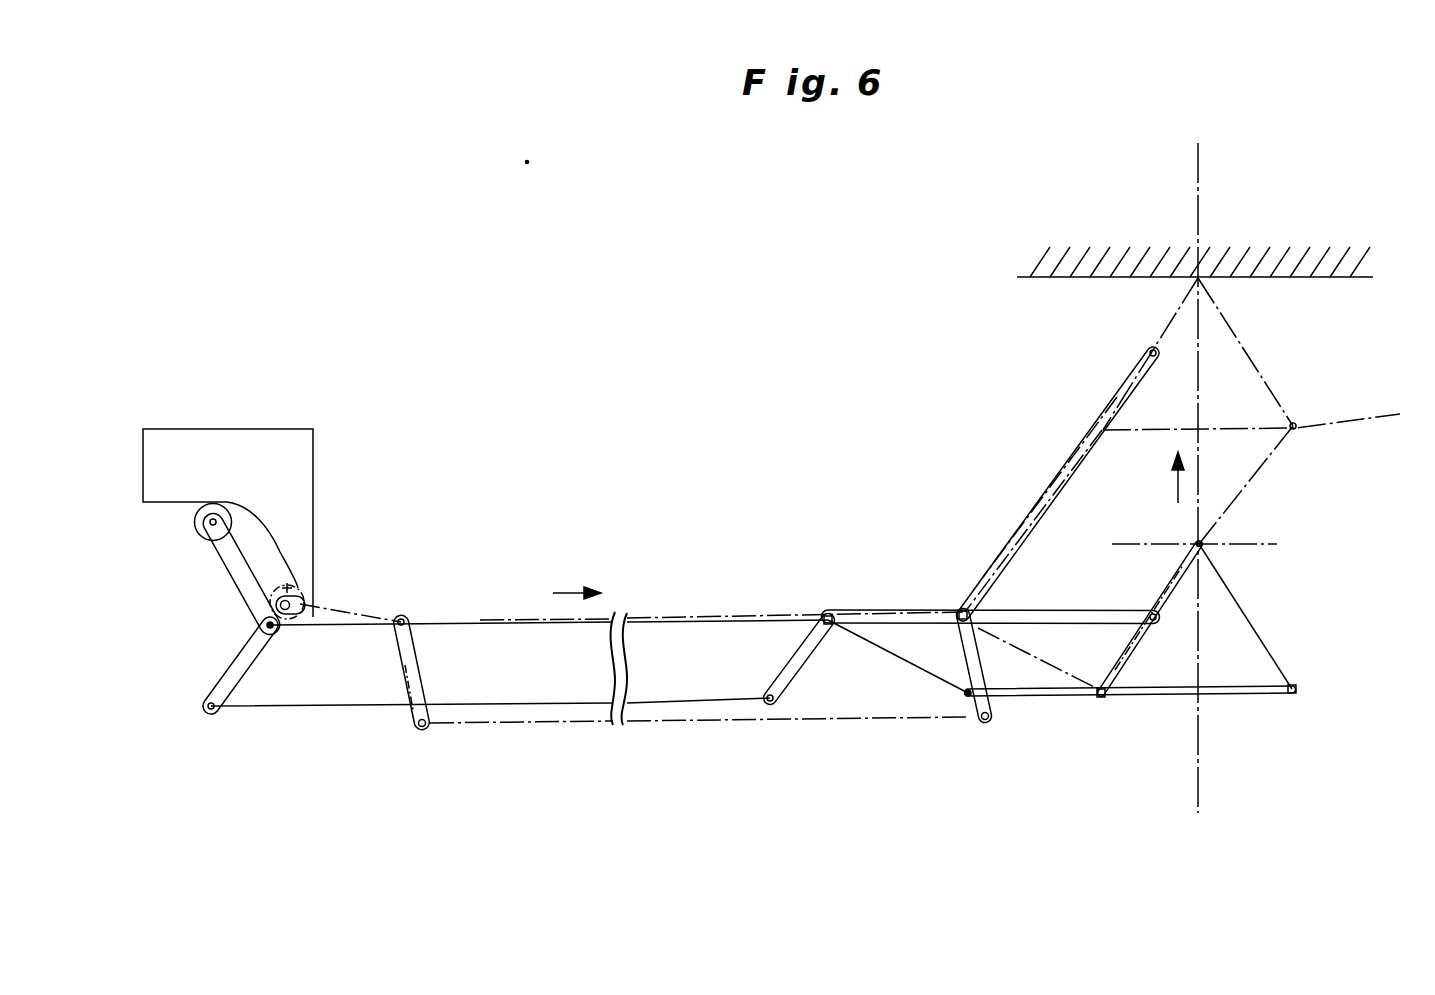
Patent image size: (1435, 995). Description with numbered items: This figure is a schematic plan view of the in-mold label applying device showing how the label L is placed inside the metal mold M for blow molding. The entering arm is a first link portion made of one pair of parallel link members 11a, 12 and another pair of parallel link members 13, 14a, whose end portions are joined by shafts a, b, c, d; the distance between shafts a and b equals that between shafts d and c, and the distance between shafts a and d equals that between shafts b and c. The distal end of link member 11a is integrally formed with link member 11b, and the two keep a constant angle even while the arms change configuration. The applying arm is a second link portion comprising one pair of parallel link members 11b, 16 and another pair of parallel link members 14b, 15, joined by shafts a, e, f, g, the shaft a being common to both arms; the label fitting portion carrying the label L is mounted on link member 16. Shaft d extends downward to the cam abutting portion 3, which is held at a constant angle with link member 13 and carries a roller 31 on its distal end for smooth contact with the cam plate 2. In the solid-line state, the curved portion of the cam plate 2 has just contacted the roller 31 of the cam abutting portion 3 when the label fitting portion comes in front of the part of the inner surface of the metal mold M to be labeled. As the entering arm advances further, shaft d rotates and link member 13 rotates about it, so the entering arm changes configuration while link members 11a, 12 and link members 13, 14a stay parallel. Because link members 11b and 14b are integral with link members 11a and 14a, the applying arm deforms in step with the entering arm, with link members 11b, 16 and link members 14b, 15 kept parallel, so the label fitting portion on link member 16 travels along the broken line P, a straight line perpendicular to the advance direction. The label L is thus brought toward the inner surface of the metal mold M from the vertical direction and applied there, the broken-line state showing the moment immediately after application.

The cam plate 2 is at (248, 447).
The cam abutting portion 3 is at (238, 570).
The roller 31 is at (198, 528).
The link member 13 is at (232, 672).
The link member 12 is at (370, 706).
The link member 11a is at (505, 620).
The link member 11b is at (920, 690).
The link member 14a is at (822, 688).
The link member 14b is at (1012, 615).
The link member 15 is at (1222, 695).
The link member 16 is at (1228, 638).
The metal mold M is at (1058, 262).
The broken line P is at (1205, 768).
The label L is at (1270, 543).
The shaft a is at (830, 612).
The shaft b is at (770, 706).
The shaft c is at (211, 712).
The shaft d is at (258, 626).
The shaft e is at (1150, 612).
The shaft f is at (1300, 685).
The shaft g is at (971, 702).